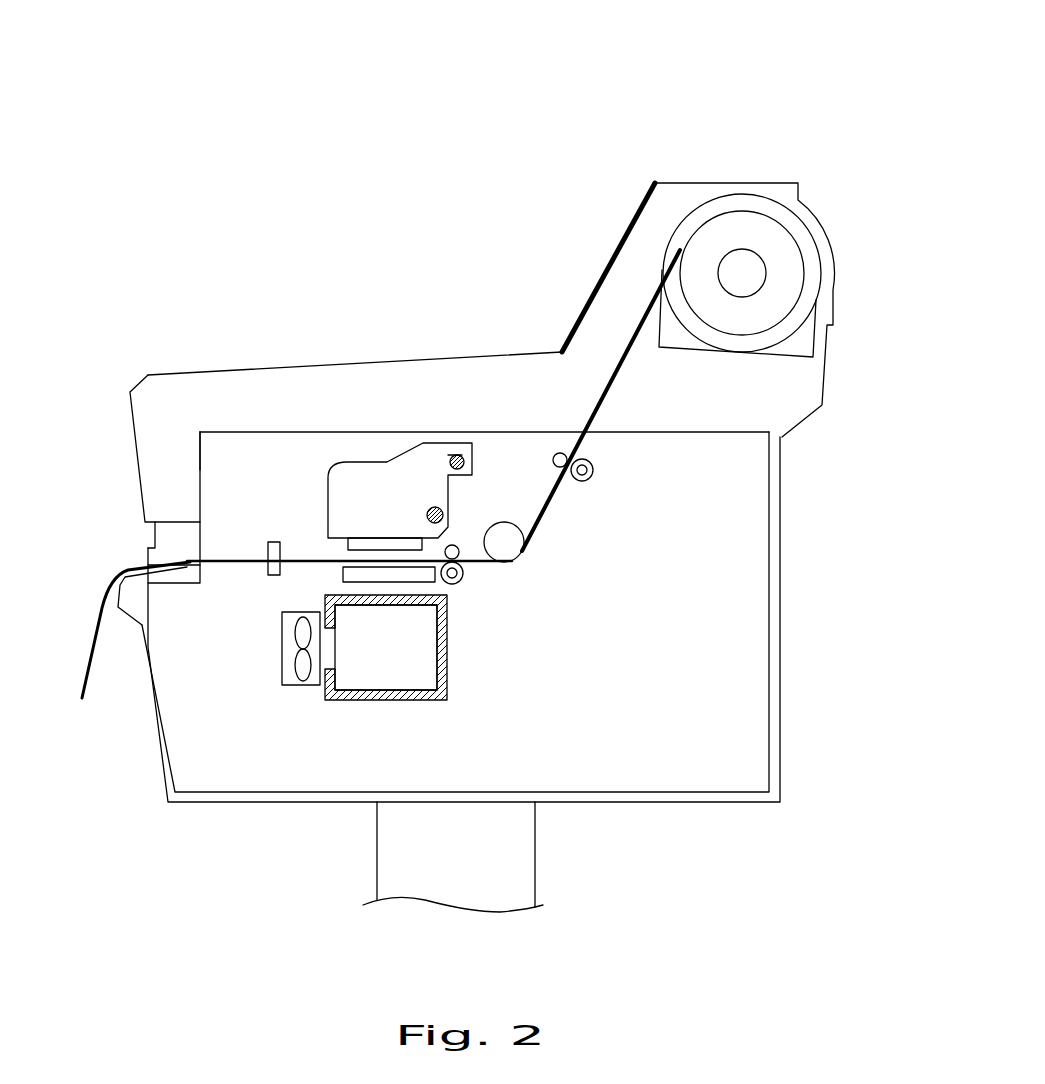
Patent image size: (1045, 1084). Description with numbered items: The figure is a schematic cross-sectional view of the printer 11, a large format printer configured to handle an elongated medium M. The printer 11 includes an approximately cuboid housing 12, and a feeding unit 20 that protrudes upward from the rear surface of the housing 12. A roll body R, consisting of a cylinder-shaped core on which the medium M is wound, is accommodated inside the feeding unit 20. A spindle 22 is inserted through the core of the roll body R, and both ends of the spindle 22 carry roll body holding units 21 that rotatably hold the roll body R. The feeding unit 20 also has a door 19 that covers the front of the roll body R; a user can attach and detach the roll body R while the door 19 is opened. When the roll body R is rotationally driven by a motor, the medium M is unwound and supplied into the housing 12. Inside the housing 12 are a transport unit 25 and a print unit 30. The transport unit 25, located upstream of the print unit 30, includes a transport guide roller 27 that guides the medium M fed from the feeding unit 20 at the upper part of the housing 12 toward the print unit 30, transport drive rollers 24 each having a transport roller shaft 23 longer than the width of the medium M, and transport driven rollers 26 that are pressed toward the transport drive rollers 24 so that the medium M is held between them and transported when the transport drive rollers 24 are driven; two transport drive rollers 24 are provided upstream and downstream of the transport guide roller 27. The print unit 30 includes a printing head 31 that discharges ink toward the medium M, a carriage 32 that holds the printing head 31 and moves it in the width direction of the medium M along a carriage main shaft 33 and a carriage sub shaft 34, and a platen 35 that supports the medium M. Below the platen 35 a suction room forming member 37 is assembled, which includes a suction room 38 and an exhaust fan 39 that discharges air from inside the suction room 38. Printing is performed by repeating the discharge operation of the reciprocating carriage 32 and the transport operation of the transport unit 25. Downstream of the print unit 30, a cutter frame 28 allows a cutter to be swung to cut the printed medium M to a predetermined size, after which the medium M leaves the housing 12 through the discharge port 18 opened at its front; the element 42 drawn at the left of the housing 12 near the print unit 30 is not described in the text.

The printer 11 is at (866, 92).
The housing 12 is at (780, 692).
The discharge port 18 is at (152, 527).
The door 19 is at (622, 235).
The feeding unit 20 is at (750, 183).
The roll body holding unit 21 is at (708, 353).
The spindle 22 is at (767, 277).
The roll body R is at (808, 255).
The transport roller shaft 23 is at (594, 468).
The transport drive roller 24 is at (586, 481).
The transport unit 25 is at (562, 580).
The transport driven roller 26 is at (557, 453).
The transport guide roller 27 is at (503, 522).
The cutter frame 28 is at (272, 542).
The print unit 30 is at (367, 347).
The printing head 31 is at (348, 545).
The carriage 32 is at (357, 461).
The carriage main shaft 33 is at (433, 508).
The carriage sub shaft 34 is at (458, 455).
The platen 35 is at (343, 578).
The suction room forming member 37 is at (447, 680).
The suction room 38 is at (400, 673).
The exhaust fan 39 is at (282, 660).
The opening 42 is at (200, 442).
The medium M is at (98, 620).